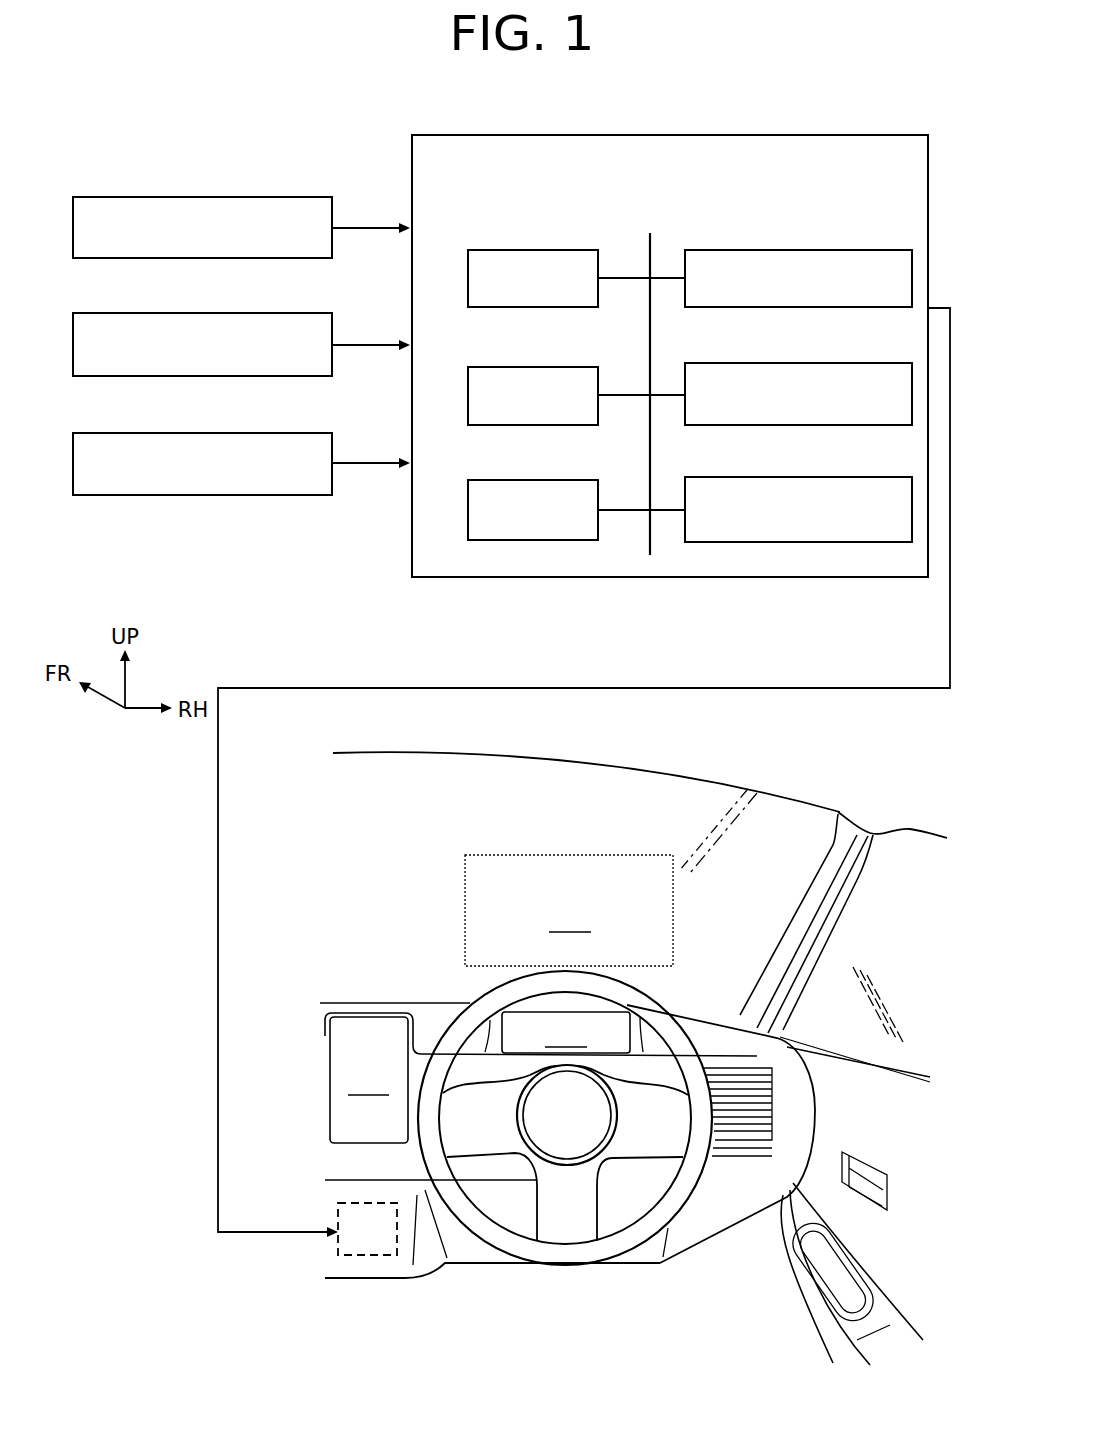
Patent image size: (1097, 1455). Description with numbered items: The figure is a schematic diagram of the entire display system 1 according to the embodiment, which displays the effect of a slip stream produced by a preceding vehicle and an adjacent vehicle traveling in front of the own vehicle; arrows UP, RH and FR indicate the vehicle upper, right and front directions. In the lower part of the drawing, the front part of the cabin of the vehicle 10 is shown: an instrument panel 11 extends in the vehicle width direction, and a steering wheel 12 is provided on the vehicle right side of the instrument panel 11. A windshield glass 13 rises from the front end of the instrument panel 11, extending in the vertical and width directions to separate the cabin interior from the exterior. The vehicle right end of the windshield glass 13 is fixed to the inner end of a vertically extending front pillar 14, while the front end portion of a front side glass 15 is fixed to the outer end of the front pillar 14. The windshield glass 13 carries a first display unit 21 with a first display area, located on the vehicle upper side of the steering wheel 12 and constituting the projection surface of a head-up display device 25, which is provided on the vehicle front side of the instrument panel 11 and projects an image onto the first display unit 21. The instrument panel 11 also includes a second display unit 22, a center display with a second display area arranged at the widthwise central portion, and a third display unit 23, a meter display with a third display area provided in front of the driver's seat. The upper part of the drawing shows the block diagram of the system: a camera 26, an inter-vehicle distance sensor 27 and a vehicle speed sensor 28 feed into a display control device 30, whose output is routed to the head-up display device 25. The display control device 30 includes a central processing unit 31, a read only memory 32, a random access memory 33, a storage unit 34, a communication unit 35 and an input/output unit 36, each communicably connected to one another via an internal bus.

The display system 1 is at (892, 118).
The vehicle 10 is at (849, 767).
The instrument panel 11 is at (710, 1235).
The steering wheel 12 is at (647, 1003).
The windshield glass 13 is at (644, 783).
The front pillar 14 is at (834, 922).
The front side glass 15 is at (917, 1048).
The first display unit 21 is at (505, 872).
The second display unit 22 is at (330, 1083).
The third display unit 23 is at (487, 1018).
The head-up display device 25 is at (397, 1262).
The camera 26 is at (271, 197).
The inter-vehicle distance sensor 27 is at (271, 313).
The vehicle speed sensor 28 is at (271, 433).
The display control device 30 is at (689, 133).
The central processing unit 31 is at (587, 250).
The read only memory 32 is at (559, 367).
The random access memory 33 is at (559, 480).
The storage unit 34 is at (845, 250).
The communication unit 35 is at (845, 363).
The input/output unit 36 is at (845, 477).